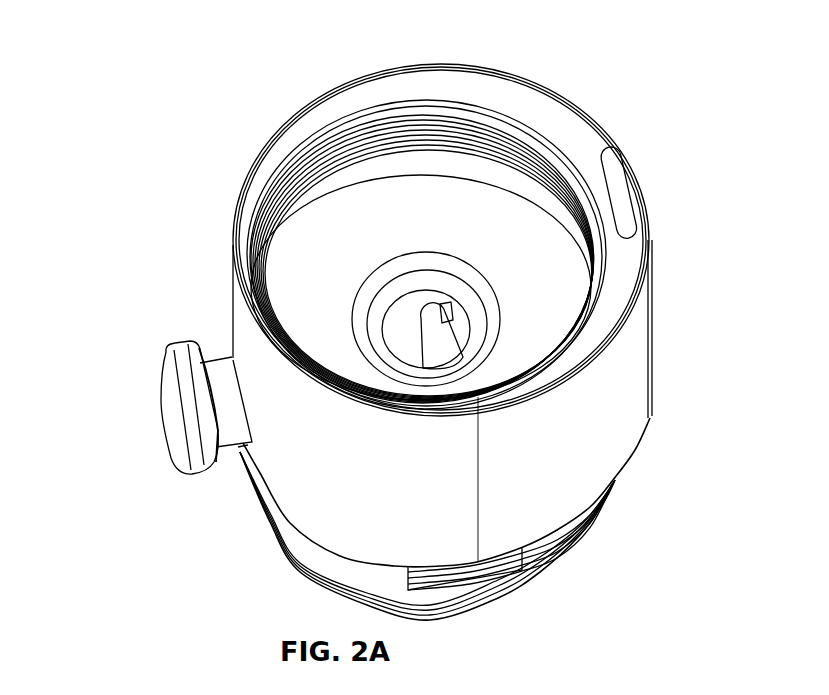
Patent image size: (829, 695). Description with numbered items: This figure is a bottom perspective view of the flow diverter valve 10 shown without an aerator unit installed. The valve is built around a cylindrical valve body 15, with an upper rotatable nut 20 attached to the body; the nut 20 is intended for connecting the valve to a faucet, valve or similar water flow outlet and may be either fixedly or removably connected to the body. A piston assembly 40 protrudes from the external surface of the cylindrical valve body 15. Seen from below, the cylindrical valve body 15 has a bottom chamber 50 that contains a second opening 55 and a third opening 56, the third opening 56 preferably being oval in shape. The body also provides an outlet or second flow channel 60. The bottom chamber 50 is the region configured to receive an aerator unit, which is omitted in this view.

The flow diverter valve 10 is at (200, 262).
The cylindrical valve body 15 is at (642, 358).
The upper rotatable nut 20 is at (498, 599).
The piston assembly 40 is at (156, 432).
The bottom chamber 50 is at (473, 228).
The second opening 55 is at (403, 343).
The third opening 56 is at (440, 342).
The outlet or second flow channel 60 is at (618, 198).